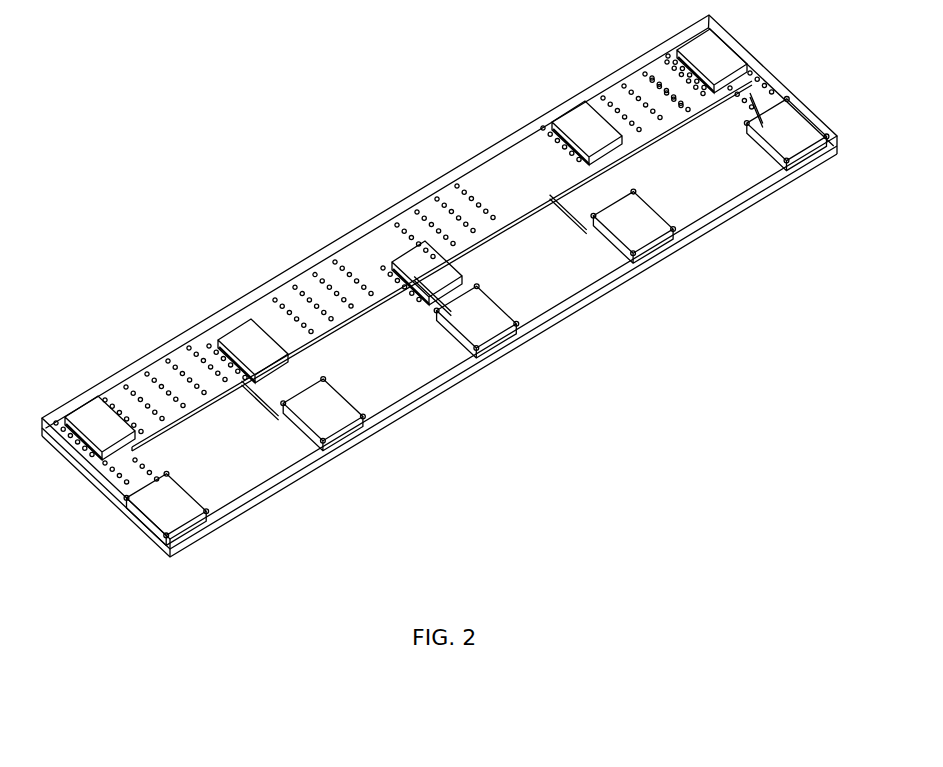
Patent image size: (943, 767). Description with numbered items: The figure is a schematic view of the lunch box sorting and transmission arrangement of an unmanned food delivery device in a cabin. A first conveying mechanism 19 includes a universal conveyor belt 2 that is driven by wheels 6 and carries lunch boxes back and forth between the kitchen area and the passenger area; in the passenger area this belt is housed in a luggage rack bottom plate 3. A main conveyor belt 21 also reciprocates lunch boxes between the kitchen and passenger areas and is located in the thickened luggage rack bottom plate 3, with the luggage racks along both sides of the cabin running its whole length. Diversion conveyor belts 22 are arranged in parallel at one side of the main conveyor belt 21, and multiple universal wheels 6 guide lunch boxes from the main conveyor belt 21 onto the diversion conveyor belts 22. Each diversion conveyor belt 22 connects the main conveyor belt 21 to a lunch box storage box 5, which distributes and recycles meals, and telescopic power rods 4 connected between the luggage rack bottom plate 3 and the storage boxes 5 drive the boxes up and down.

The universal conveyor belt 2 is at (738, 110).
The luggage rack bottom plate 3 is at (535, 270).
The telescopic power rod 4 is at (366, 415).
The lunch box storage box 5 is at (176, 507).
The universal wheel 6 is at (615, 268).
The first conveying mechanism 19 is at (414, 279).
The main conveyor belt 21 is at (182, 389).
The diversion conveyor belt 22 is at (822, 152).